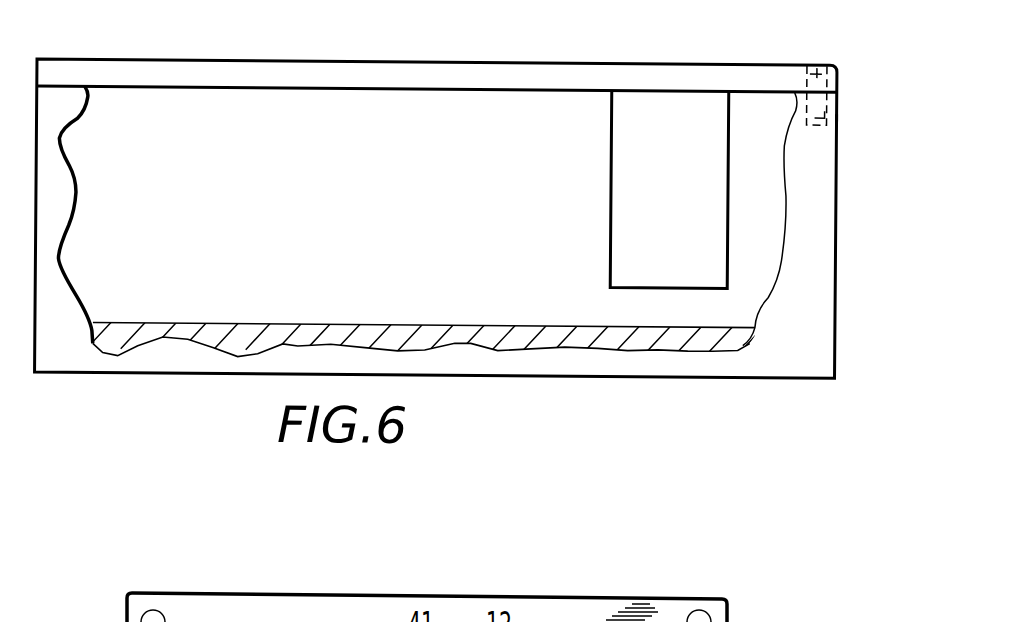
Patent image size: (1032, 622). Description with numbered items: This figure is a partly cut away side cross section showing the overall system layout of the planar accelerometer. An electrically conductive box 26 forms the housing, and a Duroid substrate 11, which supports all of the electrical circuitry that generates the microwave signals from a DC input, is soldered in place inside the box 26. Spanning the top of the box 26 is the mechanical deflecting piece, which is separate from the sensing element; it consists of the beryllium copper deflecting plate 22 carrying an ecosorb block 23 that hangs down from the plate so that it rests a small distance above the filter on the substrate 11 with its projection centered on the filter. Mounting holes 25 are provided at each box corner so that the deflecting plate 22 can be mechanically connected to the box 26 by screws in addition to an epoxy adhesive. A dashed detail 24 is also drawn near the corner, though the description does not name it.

The Duroid substrate 11 is at (612, 336).
The beryllium copper deflecting plate 22 is at (128, 75).
The ecosorb block 23 is at (703, 243).
The dashed element 24 is at (818, 49).
The mounting holes 25 is at (845, 112).
The box 26 is at (807, 340).